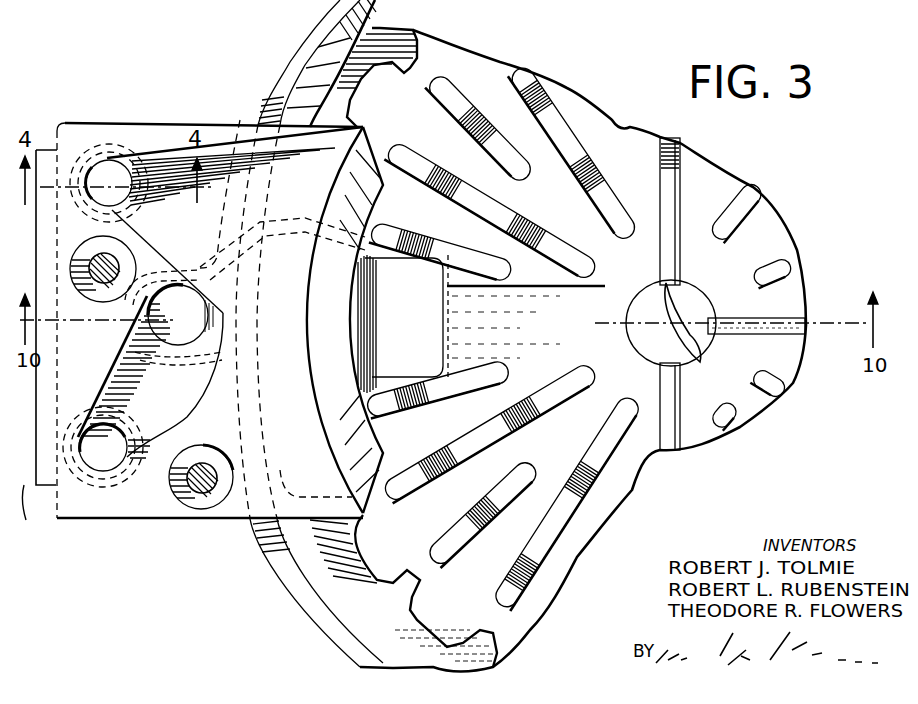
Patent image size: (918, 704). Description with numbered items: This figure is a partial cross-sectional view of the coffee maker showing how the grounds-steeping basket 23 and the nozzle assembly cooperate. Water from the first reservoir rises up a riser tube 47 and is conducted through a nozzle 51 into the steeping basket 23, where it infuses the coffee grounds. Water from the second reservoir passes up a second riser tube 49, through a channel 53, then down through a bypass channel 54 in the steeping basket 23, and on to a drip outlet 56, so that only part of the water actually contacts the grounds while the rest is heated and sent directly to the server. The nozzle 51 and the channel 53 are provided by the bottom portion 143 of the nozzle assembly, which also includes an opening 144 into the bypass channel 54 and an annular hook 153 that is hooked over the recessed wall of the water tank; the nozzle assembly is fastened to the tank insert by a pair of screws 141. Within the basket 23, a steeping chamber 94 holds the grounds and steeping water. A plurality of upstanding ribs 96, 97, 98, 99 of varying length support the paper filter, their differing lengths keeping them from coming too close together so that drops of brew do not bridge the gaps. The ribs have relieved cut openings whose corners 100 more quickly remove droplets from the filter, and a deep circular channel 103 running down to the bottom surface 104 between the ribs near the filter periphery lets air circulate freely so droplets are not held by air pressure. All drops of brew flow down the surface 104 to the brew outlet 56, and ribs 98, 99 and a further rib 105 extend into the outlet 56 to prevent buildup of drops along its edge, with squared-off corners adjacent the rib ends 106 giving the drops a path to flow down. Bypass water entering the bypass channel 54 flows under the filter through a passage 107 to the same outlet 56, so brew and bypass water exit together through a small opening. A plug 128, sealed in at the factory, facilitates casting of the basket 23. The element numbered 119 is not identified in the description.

The grounds-steeping basket 23 is at (294, 45).
The ring flange 119 is at (264, 110).
The bottom portion of nozzle assembly 143 is at (175, 123).
The riser tube 47 is at (102, 140).
The nozzle 51 is at (184, 219).
The screws 141 is at (120, 264).
The opening into bypass 144 is at (140, 305).
The bypass channel 54 is at (137, 337).
The channel 53 is at (170, 404).
The riser tube 49 is at (112, 497).
The annular hook 153 is at (41, 513).
The circular channel 103 is at (423, 78).
The bottom surface 104 is at (446, 144).
The upstanding rib 96 is at (478, 262).
The upstanding rib 97 is at (581, 262).
The upstanding rib 98 is at (683, 258).
The upstanding rib 99 is at (725, 318).
The drip outlet 56 is at (628, 337).
The ends of ribs 106 is at (697, 361).
The rib 105 is at (660, 376).
The plug 128 is at (428, 314).
The passage 107 is at (528, 338).
The steeping chamber 94 is at (570, 447).
The corners 100 is at (492, 502).